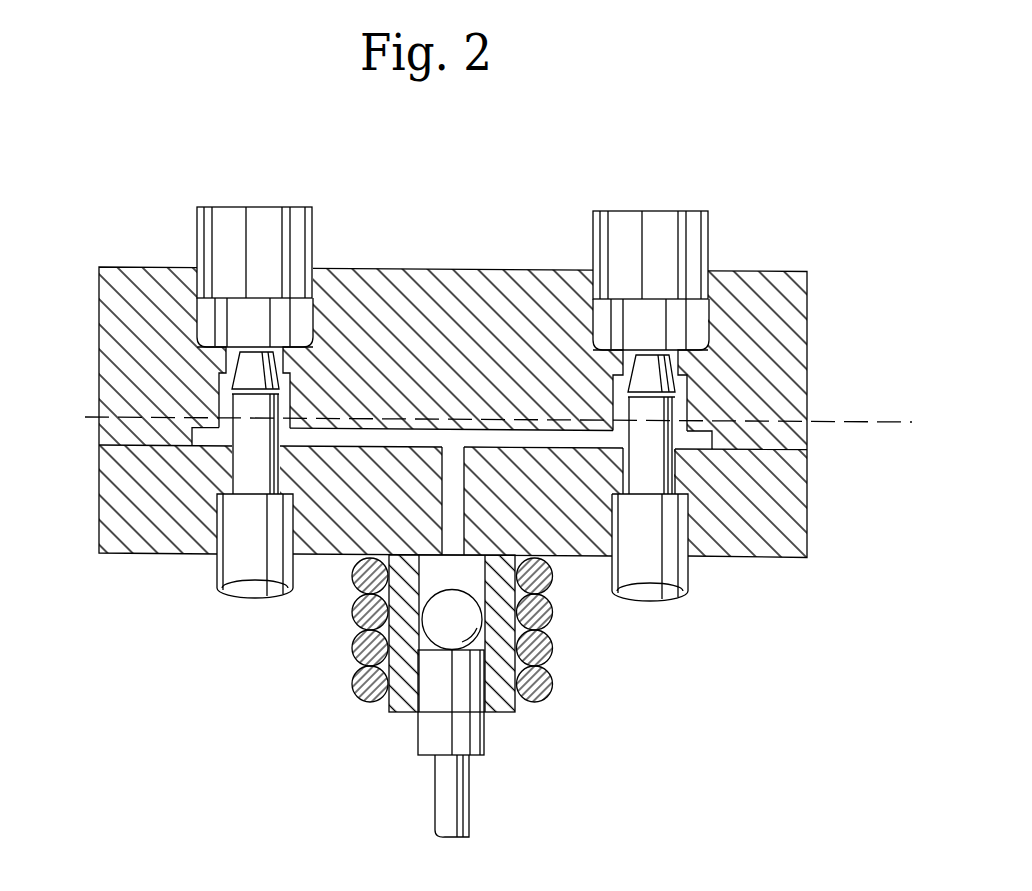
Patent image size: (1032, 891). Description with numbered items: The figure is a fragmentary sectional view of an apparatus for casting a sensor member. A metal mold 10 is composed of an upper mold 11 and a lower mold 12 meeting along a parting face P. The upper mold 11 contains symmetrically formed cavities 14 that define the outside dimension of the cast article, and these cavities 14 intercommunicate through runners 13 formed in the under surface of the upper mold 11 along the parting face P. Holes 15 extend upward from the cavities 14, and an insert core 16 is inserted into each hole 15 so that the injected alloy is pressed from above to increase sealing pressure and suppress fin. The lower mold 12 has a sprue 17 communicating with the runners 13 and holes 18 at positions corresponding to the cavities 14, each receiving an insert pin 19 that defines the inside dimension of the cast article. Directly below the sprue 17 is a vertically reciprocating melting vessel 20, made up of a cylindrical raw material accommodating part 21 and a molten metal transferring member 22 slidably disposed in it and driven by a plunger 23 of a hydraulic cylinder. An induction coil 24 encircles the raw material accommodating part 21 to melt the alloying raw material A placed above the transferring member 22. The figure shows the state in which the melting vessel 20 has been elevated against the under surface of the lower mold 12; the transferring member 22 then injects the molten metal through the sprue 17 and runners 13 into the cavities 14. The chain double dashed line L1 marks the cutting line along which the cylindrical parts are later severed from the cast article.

The metal mold 10 is at (812, 295).
The upper mold 11 is at (787, 345).
The lower mold 12 is at (787, 490).
The runners 13 is at (382, 438).
The cavities 14 is at (225, 388).
The holes 15 is at (303, 317).
The insert core 16 is at (637, 223).
The sprue 17 is at (447, 540).
The holes 18 is at (683, 528).
The insert pin 19 is at (668, 577).
The melting vessel 20 is at (378, 710).
The raw material accommodating part 21 is at (402, 700).
The molten metal transferring member 22 is at (470, 740).
The plunger 23 is at (460, 822).
The induction coil 24 is at (354, 604).
The alloying raw material A is at (463, 625).
The parting face P is at (120, 429).
The cutting line L1 is at (847, 422).